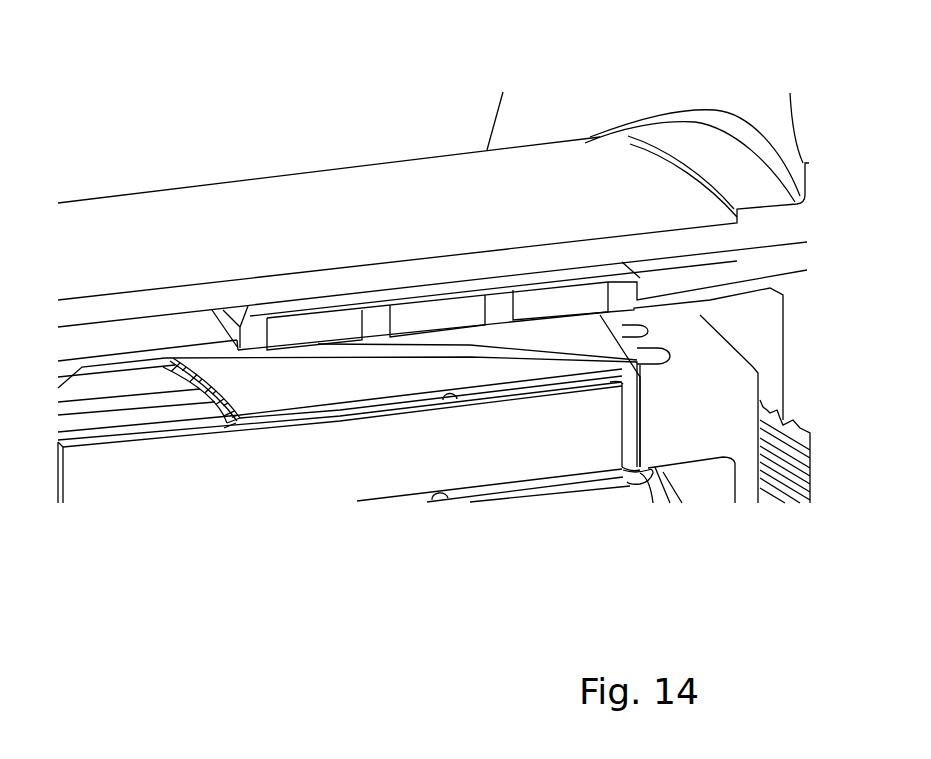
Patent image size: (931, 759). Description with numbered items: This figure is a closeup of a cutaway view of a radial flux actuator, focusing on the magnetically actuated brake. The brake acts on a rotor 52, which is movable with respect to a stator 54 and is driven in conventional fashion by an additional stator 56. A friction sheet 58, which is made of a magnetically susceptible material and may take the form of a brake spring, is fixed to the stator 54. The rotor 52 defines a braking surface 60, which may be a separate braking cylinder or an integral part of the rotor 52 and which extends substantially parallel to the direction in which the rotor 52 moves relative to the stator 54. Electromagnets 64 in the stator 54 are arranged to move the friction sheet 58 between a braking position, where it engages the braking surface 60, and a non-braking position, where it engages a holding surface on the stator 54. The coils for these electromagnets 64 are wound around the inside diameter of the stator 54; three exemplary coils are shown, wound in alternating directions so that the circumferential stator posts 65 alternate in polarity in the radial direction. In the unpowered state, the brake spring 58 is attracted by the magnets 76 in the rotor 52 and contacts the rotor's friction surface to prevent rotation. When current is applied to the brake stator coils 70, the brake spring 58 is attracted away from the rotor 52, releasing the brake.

The rotor 52 is at (260, 420).
The stator 54 is at (620, 287).
The additional stator 56 is at (596, 489).
The friction sheet 58 is at (583, 328).
The braking surface 60 is at (322, 388).
The electromagnets 64 is at (303, 330).
The circumferential stator posts 65 is at (497, 303).
The brake stator coils 70 is at (641, 497).
The magnets 76 is at (103, 418).